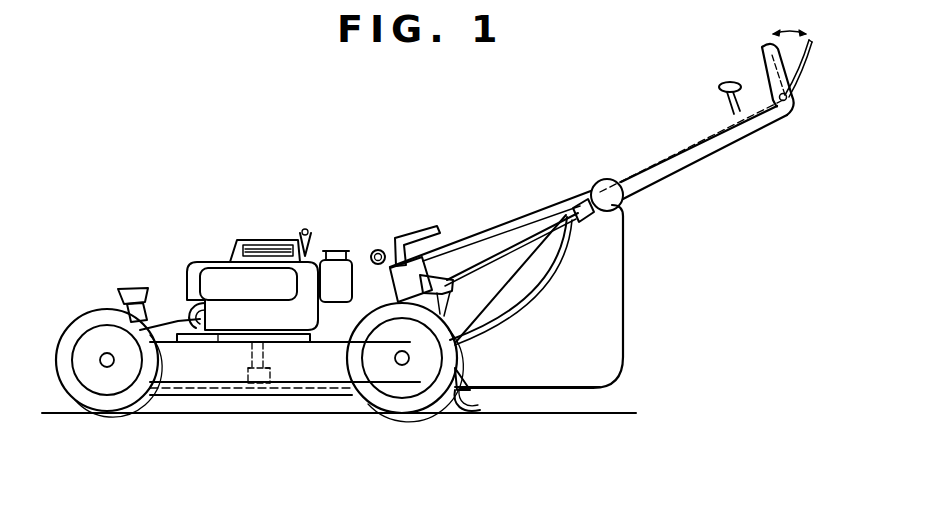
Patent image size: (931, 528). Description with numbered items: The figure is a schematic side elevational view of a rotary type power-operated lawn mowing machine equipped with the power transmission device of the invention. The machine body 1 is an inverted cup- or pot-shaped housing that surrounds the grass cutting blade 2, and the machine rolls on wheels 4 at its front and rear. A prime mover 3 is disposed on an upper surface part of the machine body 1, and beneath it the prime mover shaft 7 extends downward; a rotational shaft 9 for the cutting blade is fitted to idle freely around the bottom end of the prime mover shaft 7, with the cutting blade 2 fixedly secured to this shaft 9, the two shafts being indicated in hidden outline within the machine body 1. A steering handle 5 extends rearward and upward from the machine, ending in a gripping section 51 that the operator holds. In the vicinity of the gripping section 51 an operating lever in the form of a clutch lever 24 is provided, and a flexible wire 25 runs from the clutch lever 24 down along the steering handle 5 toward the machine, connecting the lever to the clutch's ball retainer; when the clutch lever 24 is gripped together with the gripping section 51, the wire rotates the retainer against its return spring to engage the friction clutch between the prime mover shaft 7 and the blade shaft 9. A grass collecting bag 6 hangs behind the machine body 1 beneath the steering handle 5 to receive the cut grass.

The machine body 1 is at (167, 332).
The grass cutting blade 2 is at (195, 396).
The prime mover 3 is at (216, 262).
The wheels 4 is at (96, 315).
The steering handle 5 is at (660, 162).
The gripping section 51 is at (763, 47).
The clutch lever 24 is at (810, 83).
The flexible wire 25 is at (524, 279).
The grass collecting bag 6 is at (603, 281).
The prime mover shaft 7 is at (252, 346).
The rotational shaft for cutting blade 9 is at (268, 372).